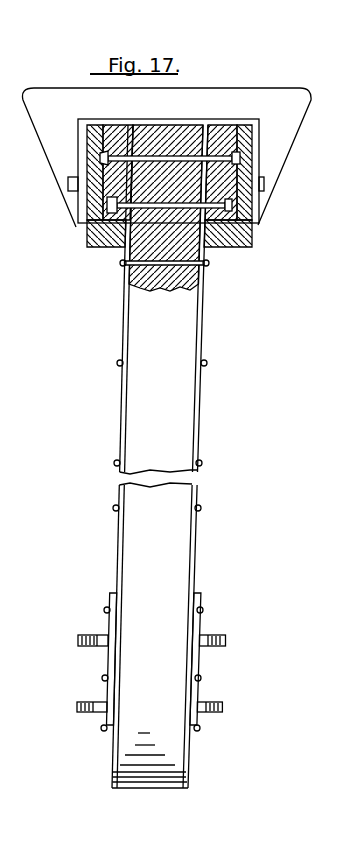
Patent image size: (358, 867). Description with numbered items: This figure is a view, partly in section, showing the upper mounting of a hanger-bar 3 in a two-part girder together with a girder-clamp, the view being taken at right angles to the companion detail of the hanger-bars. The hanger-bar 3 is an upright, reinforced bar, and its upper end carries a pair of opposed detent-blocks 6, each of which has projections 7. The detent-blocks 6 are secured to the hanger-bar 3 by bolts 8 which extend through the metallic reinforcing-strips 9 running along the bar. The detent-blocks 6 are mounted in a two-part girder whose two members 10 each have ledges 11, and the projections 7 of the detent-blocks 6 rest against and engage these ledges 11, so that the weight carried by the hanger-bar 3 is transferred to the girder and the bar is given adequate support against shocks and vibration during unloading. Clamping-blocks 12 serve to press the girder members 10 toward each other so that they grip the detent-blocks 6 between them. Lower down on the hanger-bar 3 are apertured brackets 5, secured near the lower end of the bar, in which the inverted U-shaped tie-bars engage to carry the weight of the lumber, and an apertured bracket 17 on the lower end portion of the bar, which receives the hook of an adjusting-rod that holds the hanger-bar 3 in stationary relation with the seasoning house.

The clamping-block 12 is at (304, 103).
The ledge 11 is at (105, 190).
The girder member 10 is at (105, 232).
The detent-block 6 is at (115, 133).
The metallic reinforcing-strip 9 is at (124, 318).
The bolt 8 is at (172, 157).
The projection 7 is at (100, 172).
The hanger-bar 3 is at (178, 435).
The apertured bracket 5 is at (73, 641).
The apertured bracket 17 is at (77, 705).